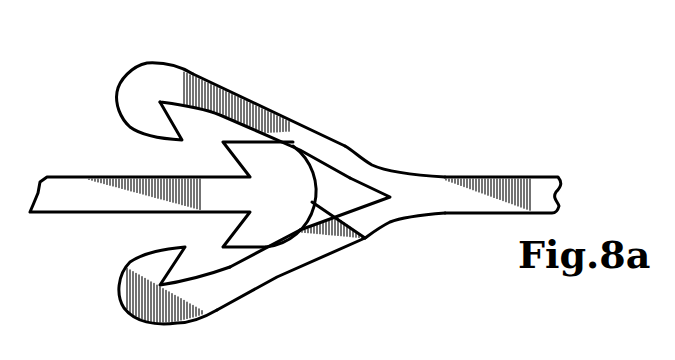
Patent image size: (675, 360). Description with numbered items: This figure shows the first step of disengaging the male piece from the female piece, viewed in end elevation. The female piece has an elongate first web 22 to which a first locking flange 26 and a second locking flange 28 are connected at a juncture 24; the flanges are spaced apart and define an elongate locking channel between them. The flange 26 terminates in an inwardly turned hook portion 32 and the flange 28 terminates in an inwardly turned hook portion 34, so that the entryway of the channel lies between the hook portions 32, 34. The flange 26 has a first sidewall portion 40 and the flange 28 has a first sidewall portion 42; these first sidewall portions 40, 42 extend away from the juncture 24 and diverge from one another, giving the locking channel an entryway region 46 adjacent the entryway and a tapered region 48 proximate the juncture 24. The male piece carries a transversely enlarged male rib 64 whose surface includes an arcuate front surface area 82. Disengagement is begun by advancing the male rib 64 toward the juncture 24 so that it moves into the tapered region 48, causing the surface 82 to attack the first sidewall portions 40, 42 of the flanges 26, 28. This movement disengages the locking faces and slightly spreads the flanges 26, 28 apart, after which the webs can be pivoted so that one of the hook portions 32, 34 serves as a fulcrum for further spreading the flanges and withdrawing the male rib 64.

The first web 22 is at (500, 177).
The juncture 24 is at (400, 200).
The first locking flange 26 is at (370, 172).
The second locking flange 28 is at (263, 270).
The hook portion 32 is at (133, 100).
The hook portion 34 is at (127, 305).
The first sidewall portion 40 is at (224, 86).
The first sidewall portion 42 is at (226, 308).
The entryway region 46 is at (198, 135).
The tapered region 48 is at (317, 188).
The male rib 64 is at (273, 183).
The arcuate front surface area 82 is at (363, 238).